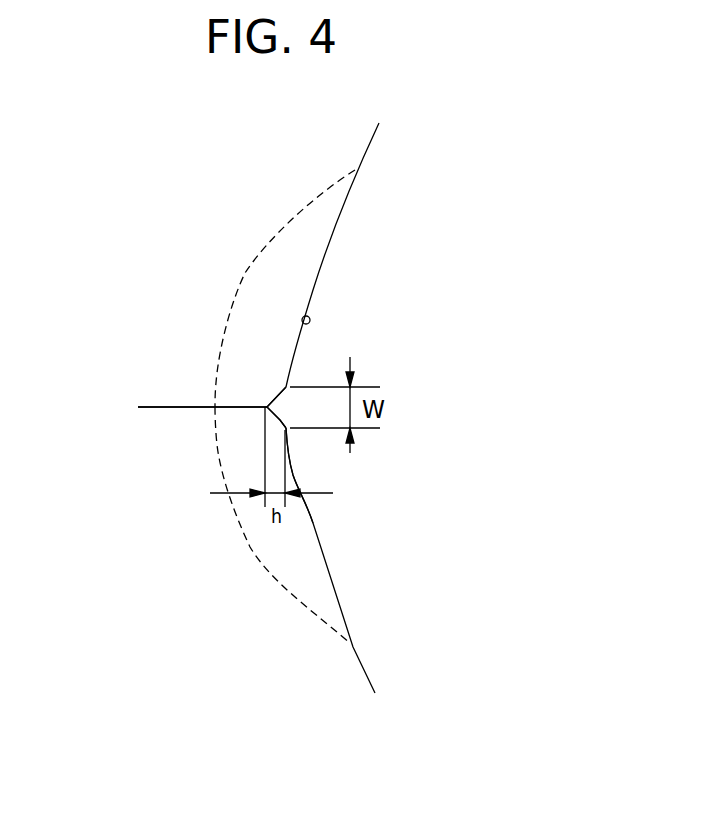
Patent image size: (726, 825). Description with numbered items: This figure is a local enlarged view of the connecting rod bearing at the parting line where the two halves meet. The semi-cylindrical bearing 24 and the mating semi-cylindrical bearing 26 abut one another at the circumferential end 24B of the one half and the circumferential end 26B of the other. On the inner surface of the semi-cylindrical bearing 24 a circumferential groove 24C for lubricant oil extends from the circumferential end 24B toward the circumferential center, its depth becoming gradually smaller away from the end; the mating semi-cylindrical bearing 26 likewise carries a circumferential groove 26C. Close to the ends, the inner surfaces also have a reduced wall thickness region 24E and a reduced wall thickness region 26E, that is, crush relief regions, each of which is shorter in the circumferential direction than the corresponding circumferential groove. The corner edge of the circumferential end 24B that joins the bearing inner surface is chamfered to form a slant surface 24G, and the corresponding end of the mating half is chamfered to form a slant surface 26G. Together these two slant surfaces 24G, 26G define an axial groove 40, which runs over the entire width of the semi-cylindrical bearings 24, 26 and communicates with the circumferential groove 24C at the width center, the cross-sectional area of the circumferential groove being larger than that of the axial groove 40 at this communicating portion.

The semi-cylindrical bearing 24 is at (254, 663).
The semi-cylindrical bearing 26 is at (268, 202).
The circumferential end 24B is at (166, 406).
The circumferential end 26B is at (147, 408).
The circumferential groove 24C is at (250, 548).
The circumferential groove 26C is at (227, 308).
The reduced wall thickness region 24E is at (293, 472).
The reduced wall thickness region 26E is at (302, 320).
The slant surface 24G is at (280, 421).
The slant surface 26G is at (277, 396).
The axial groove 40 is at (296, 404).